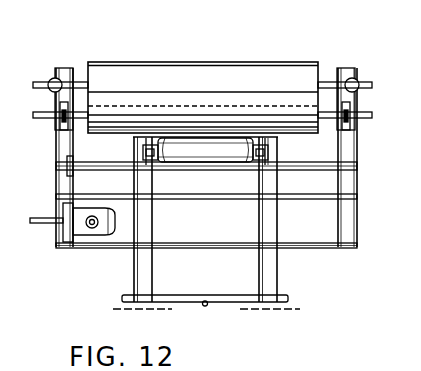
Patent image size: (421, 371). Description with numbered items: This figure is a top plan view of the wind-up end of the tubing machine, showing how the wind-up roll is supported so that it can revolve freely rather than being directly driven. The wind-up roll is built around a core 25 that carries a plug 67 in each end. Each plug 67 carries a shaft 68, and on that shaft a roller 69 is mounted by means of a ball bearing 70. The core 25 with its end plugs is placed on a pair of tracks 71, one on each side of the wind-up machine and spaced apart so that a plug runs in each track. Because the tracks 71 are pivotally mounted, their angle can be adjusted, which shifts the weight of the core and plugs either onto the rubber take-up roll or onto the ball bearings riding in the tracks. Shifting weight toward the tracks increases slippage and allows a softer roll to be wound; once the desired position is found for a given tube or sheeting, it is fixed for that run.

The tracks 71 is at (63, 70).
The shaft 68 is at (268, 146).
The ball bearing 70 is at (264, 154).
The roller 69 is at (262, 163).
The core 25 is at (203, 168).
The plug 67 is at (232, 165).